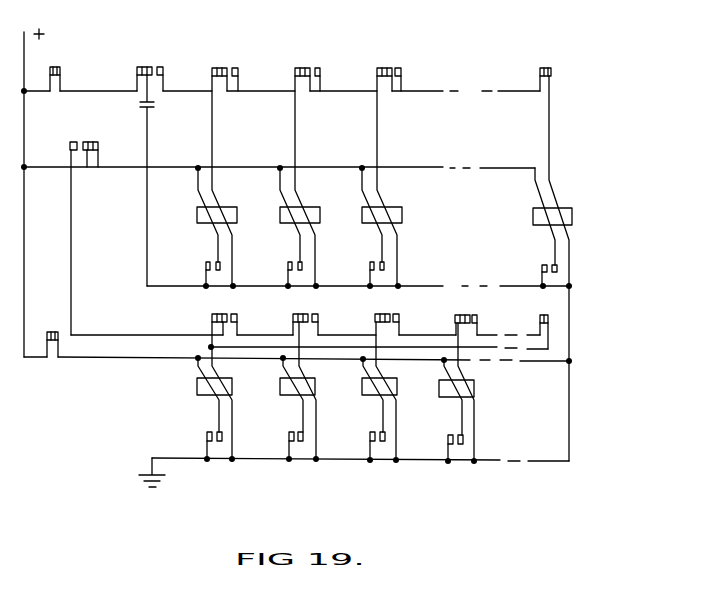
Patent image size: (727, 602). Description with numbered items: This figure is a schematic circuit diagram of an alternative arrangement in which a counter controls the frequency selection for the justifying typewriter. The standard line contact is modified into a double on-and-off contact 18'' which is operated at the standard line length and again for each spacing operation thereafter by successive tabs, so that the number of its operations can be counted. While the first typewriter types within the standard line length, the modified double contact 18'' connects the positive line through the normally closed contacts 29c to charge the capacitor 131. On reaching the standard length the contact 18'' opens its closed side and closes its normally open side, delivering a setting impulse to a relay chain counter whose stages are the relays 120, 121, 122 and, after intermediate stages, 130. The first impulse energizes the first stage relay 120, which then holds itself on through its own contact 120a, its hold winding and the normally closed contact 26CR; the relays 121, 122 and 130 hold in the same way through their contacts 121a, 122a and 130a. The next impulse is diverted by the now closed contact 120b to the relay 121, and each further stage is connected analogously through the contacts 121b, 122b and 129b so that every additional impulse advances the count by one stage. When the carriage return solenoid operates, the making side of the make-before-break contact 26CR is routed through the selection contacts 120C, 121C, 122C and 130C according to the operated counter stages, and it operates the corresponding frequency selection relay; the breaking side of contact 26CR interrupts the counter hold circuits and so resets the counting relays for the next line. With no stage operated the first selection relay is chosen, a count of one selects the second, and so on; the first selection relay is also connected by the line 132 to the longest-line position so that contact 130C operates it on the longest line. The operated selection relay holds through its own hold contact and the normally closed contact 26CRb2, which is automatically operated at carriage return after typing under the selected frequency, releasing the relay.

The normally closed contacts of relay 29 29c is at (70, 59).
The modified double line contact 18'' is at (154, 65).
The capacitor 131 is at (143, 107).
The carriage return relay contact 26CR is at (85, 142).
The carriage return contact 26CRb2 is at (53, 352).
The contact of relay 120 120b is at (232, 58).
The contact of relay 121 121b is at (313, 58).
The contact of relay 122 122b is at (397, 58).
The contact of counter relay 129 129b is at (549, 61).
The first stage relay 120 is at (197, 221).
The second stage relay 121 is at (280, 221).
The third stage relay 122 is at (362, 221).
The last stage relay 130 is at (533, 221).
The hold contact of relay 120 120a is at (206, 270).
The hold contact of relay 121 121a is at (289, 270).
The hold contact of relay 122 122a is at (371, 270).
The hold contact of relay 130 130a is at (542, 272).
The selection contact of relay 120 120C is at (212, 322).
The selection contact of relay 121 121C is at (293, 322).
The selection contact of relay 122 122C is at (375, 322).
The selection contact of relay 130 130C is at (540, 330).
The line 132 is at (542, 351).